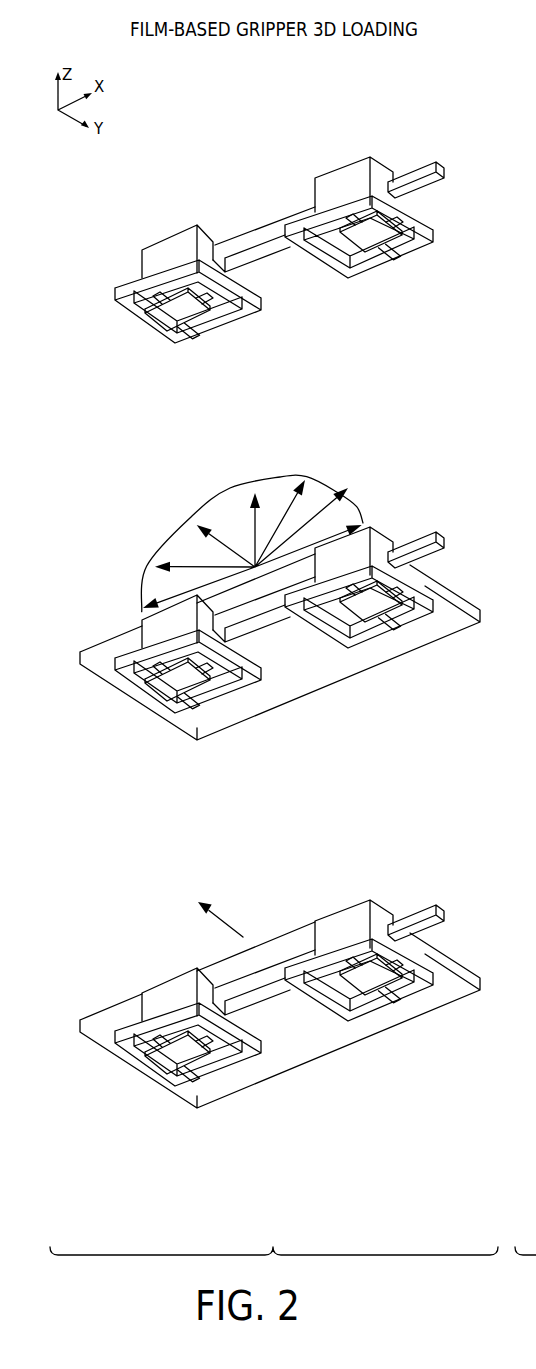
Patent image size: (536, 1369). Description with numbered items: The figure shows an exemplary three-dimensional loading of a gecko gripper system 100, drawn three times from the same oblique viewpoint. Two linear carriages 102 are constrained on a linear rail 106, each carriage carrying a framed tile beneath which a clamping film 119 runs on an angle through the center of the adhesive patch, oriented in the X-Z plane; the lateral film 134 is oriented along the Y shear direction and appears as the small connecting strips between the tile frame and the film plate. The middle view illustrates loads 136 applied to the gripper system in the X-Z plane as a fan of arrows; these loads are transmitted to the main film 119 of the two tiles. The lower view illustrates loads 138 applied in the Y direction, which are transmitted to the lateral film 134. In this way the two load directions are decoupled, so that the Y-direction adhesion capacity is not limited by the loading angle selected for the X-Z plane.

The gecko gripper system 100 is at (140, 217).
The linear carriage 102 is at (205, 224).
The linear rail 106 is at (433, 162).
The clamping film 119 is at (212, 330).
The lateral film 134 is at (146, 314).
The loads applied in the X-Z plane 136 is at (353, 470).
The loads applied in the Y direction 138 is at (232, 925).